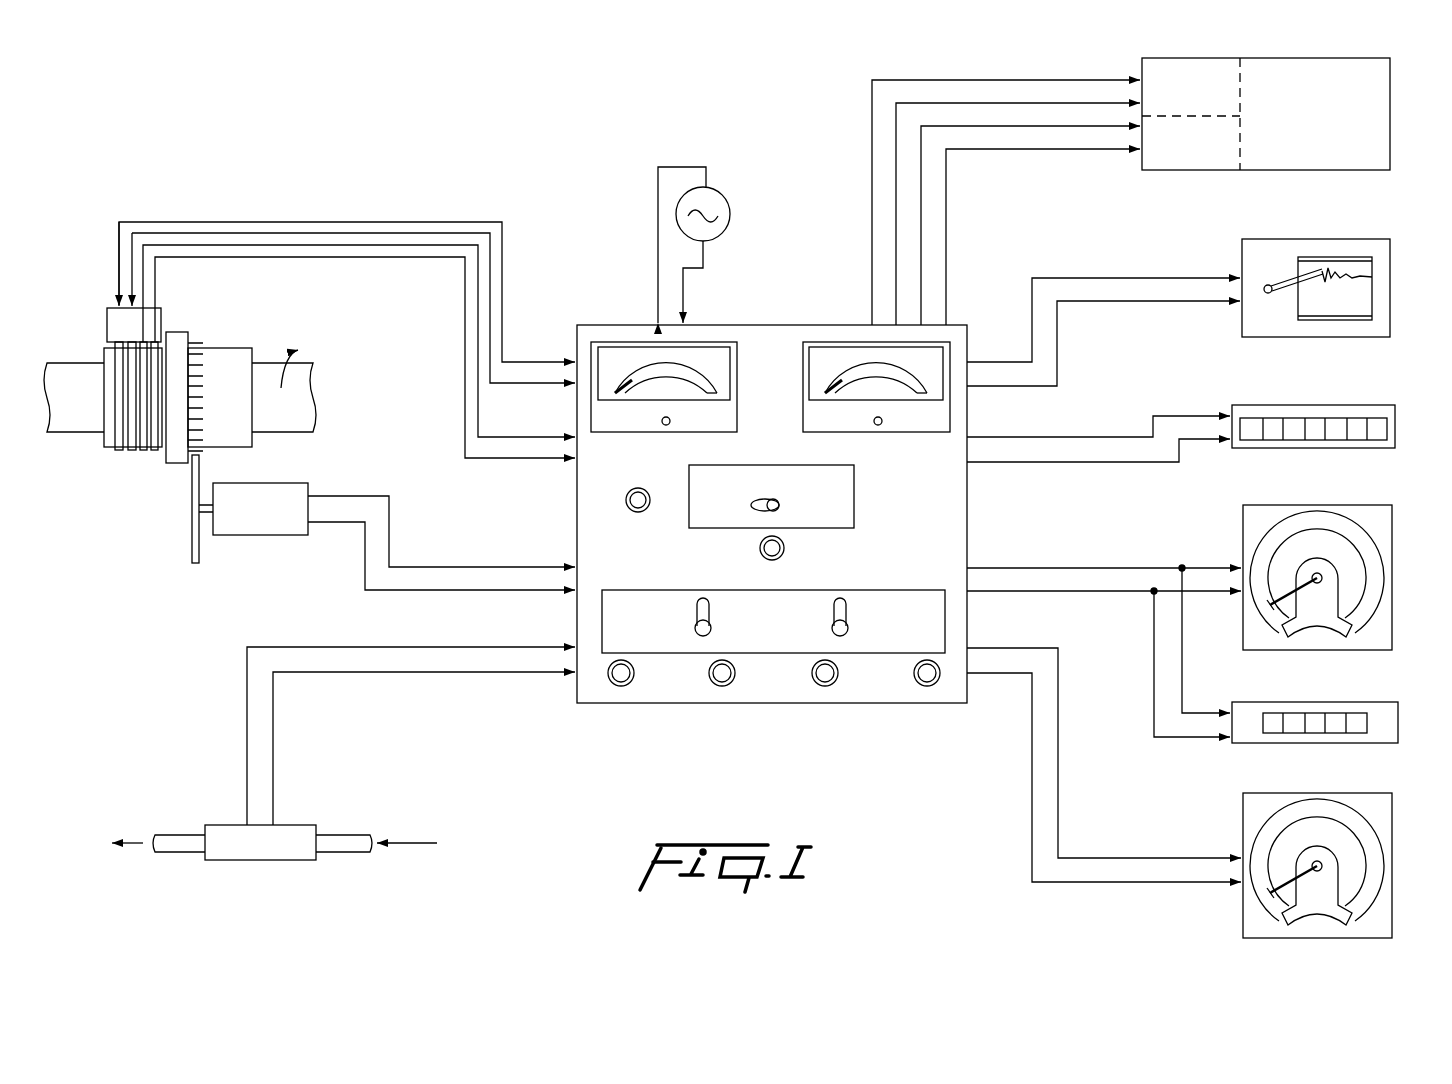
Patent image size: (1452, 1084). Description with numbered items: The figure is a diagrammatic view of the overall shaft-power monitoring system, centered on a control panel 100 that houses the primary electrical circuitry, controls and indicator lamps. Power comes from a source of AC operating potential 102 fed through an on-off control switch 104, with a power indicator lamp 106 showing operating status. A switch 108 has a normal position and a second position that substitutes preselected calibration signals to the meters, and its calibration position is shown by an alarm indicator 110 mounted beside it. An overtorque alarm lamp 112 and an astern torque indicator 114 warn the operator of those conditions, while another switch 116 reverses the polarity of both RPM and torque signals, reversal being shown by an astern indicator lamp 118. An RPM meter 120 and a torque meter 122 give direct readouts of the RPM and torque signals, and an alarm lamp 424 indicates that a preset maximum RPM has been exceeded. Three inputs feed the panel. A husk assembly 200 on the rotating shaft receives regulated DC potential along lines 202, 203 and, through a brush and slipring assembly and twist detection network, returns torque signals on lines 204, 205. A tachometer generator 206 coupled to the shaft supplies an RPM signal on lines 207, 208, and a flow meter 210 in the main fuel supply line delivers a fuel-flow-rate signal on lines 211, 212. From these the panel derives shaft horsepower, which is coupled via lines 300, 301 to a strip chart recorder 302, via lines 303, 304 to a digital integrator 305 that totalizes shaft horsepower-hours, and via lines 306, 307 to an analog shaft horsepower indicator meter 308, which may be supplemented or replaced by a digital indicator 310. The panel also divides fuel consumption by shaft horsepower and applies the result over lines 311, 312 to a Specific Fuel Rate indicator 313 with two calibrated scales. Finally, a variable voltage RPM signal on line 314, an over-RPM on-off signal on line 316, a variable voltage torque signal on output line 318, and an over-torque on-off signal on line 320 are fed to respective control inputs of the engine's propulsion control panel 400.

The control panel 100 is at (593, 702).
The source of AC operating potential 102 is at (721, 229).
The on-off control switch 104 is at (703, 600).
The power indicator lamp 106 is at (720, 686).
The switch 108 is at (842, 598).
The alarm indicator 110 is at (823, 686).
The overtorque alarm lamp 112 is at (623, 686).
The astern torque indicator 114 is at (927, 686).
The switch 116 is at (747, 505).
The astern indicator lamp 118 is at (777, 557).
The RPM meter 120 is at (732, 408).
The torque meter 122 is at (803, 372).
The husk assembly 200 is at (103, 350).
The line 202 is at (187, 222).
The line 203 is at (243, 235).
The line 204 is at (318, 247).
The line 205 is at (402, 258).
The tachometer generator 206 is at (267, 523).
The line 207 is at (483, 567).
The line 208 is at (498, 588).
The flow meter 210 is at (308, 832).
The line 211 is at (363, 648).
The line 212 is at (402, 672).
The line 300 is at (1000, 383).
The line 301 is at (992, 360).
The strip chart recorder 302 is at (1282, 245).
The line 303 is at (1063, 457).
The line 304 is at (1058, 438).
The digital integrator 305 is at (1283, 410).
The line 306 is at (1038, 590).
The line 307 is at (1028, 568).
The analog shaft horsepower indicator meter 308 is at (1248, 528).
The digital indicator 310 is at (1305, 703).
The line 311 is at (1032, 711).
The line 312 is at (1057, 663).
The Specific Fuel Rate indicator 313 is at (1387, 797).
The line 314 is at (875, 170).
The line 316 is at (898, 142).
The output line 318 is at (920, 250).
The line 320 is at (945, 205).
The propulsion control panel 400 is at (1385, 110).
The alarm lamp 424 is at (638, 488).